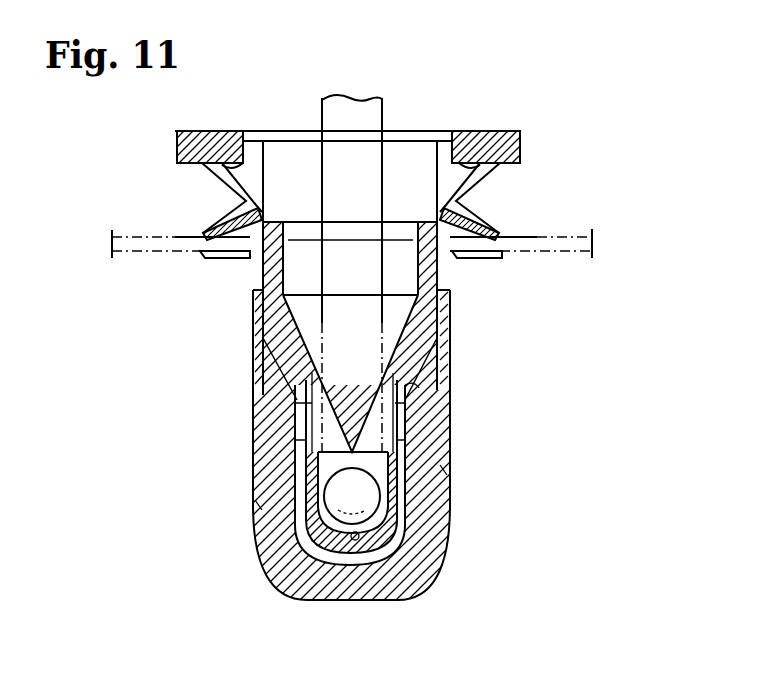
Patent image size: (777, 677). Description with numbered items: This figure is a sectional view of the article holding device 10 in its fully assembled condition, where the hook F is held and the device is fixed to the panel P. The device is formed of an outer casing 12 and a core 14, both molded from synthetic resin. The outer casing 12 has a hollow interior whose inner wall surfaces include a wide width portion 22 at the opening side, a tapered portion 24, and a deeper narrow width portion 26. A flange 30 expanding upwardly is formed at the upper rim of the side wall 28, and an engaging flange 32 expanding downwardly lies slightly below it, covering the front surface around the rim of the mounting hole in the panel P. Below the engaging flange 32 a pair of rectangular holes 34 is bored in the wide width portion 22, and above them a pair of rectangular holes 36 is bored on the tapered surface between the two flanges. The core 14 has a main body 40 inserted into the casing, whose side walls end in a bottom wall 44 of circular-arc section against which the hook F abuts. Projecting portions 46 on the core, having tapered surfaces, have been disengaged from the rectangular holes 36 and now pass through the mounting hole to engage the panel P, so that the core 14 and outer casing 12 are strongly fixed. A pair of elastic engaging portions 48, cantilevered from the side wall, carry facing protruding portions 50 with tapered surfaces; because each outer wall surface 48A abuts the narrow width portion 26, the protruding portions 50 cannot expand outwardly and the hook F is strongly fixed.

The article holding device 10 is at (499, 55).
The outer casing 12 is at (468, 119).
The core 14 is at (291, 211).
The wide width portion 22 is at (422, 366).
The tapered portion 24 is at (418, 388).
The narrow width portion 26 is at (420, 495).
The side wall 28 is at (253, 470).
The flange 30 is at (520, 140).
The engaging flange 32 is at (482, 216).
The rectangular holes 34 is at (202, 251).
The rectangular holes 36 is at (207, 182).
The main body 40 is at (310, 250).
The bottom wall 44 is at (355, 540).
The projecting portions 46 is at (262, 287).
The elastic engaging portions 48 is at (258, 505).
The outer wall surface 48A is at (300, 440).
The protruding portions 50 is at (300, 415).
The hook F is at (383, 123).
The panel P is at (592, 237).